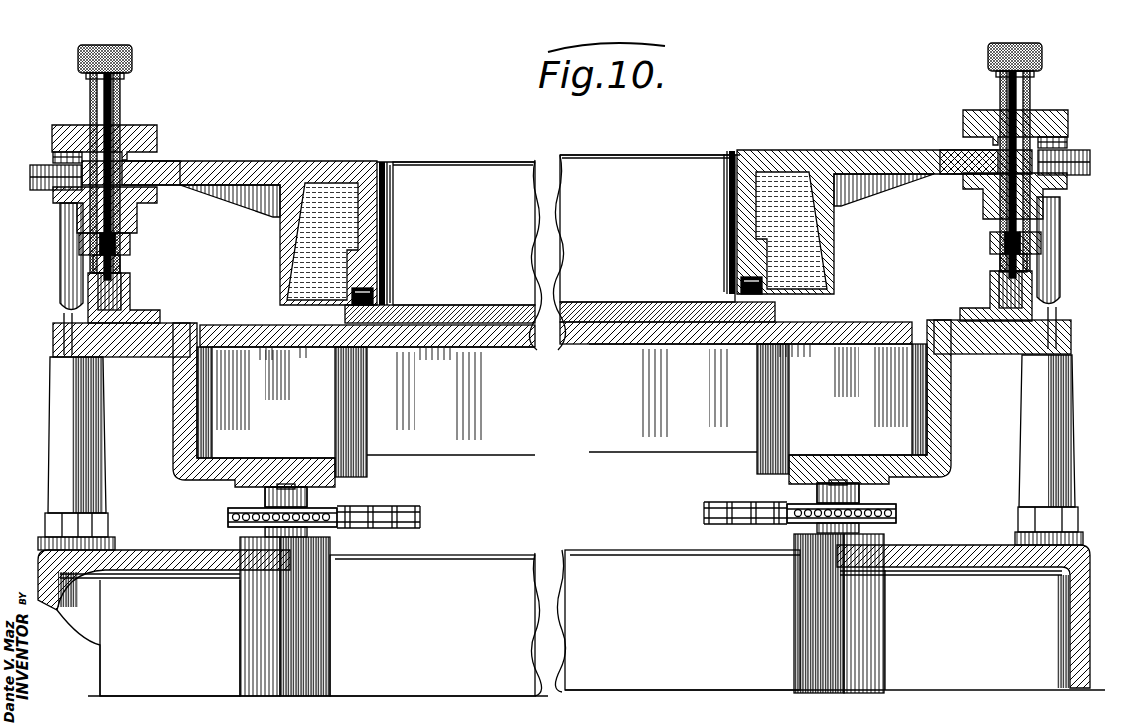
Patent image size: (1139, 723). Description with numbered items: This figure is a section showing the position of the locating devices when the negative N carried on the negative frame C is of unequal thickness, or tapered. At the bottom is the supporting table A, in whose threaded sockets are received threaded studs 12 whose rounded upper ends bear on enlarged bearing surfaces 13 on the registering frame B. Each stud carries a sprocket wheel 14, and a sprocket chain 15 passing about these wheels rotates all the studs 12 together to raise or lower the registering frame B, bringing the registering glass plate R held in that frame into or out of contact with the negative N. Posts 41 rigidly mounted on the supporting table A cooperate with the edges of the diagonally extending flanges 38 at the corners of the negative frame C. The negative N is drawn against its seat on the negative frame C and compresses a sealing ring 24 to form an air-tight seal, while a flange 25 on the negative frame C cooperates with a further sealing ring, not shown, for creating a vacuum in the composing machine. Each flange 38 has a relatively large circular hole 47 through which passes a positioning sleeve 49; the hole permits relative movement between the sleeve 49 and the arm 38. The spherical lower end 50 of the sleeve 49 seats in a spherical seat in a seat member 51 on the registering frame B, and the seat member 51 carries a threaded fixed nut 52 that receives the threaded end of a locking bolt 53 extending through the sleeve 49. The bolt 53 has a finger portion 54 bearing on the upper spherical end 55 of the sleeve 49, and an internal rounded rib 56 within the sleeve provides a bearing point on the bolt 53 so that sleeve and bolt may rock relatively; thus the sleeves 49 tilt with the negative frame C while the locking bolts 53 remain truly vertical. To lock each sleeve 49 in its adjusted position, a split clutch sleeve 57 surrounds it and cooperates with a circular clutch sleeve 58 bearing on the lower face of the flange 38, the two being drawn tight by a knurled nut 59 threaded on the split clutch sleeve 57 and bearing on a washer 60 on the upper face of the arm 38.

The threaded stud 12 is at (283, 488).
The enlarged bearing surface 13 is at (310, 490).
The sprocket wheel 14 is at (228, 518).
The sprocket chain 15 is at (421, 514).
The sealing ring 24 is at (376, 298).
The flange 25 is at (286, 264).
The diagonally extending flange 38 is at (205, 163).
The post 41 is at (60, 424).
The circular hole 47 is at (53, 203).
The positioning sleeve 49 is at (121, 114).
The spherical lower end 50 is at (131, 242).
The seat member 51 is at (121, 262).
The threaded fixed nut 52 is at (131, 288).
The locking bolt 53 is at (119, 93).
The finger portion 54 is at (131, 50).
The upper spherical end 55 is at (89, 78).
The internal rounded rib 56 is at (80, 250).
The split clutch sleeve 57 is at (153, 167).
The circular clutch sleeve 58 is at (138, 213).
The knurled nut 59 is at (158, 130).
The washer 60 is at (60, 157).
The supporting table A is at (640, 678).
The registering frame B is at (166, 422).
The negative frame C is at (714, 160).
The negative N is at (625, 304).
The registering glass plate R is at (718, 345).